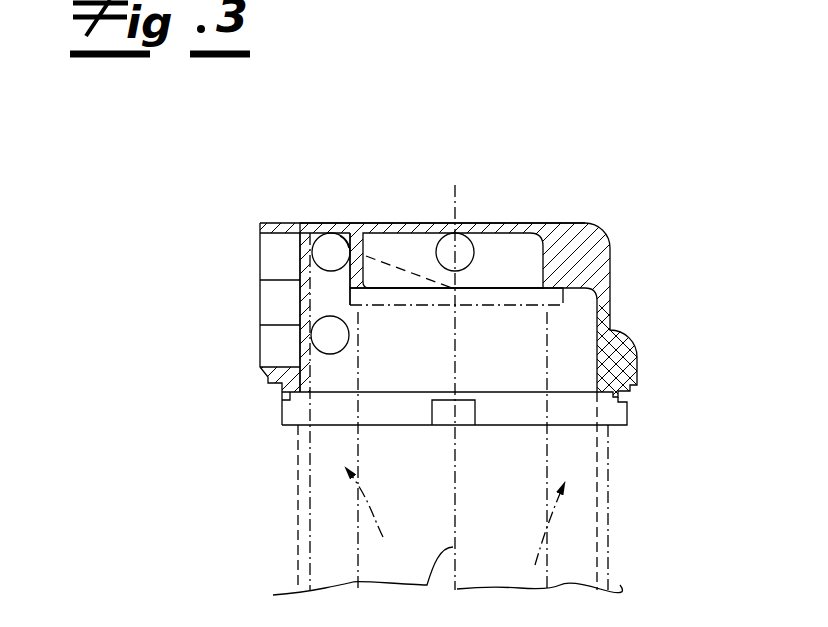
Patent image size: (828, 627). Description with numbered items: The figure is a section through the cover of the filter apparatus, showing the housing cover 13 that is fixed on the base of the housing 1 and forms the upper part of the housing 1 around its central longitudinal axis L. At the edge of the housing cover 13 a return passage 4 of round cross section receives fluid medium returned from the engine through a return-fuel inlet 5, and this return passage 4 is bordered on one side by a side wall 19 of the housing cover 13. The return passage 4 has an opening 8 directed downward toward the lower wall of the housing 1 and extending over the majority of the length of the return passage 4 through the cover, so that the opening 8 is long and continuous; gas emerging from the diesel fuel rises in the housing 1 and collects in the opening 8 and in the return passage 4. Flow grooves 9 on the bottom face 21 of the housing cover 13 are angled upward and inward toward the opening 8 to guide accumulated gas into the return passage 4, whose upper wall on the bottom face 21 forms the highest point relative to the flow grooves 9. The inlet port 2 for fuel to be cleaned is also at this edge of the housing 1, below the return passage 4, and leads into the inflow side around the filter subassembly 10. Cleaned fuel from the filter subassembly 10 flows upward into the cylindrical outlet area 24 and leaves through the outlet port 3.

The housing 1 is at (297, 538).
The inlet port 2 is at (313, 325).
The outlet port 3 is at (465, 230).
The return passage 4 is at (333, 228).
The return-fuel inlet 5 is at (345, 227).
The opening 8 is at (327, 283).
The flow grooves 9 is at (405, 248).
The filter subassembly 10 is at (357, 565).
The housing cover 13 is at (628, 226).
The side wall 19 is at (305, 285).
The bottom face of the cover 21 is at (578, 294).
The cylindrical outlet area 24 is at (510, 228).
The central longitudinal axis L is at (427, 586).